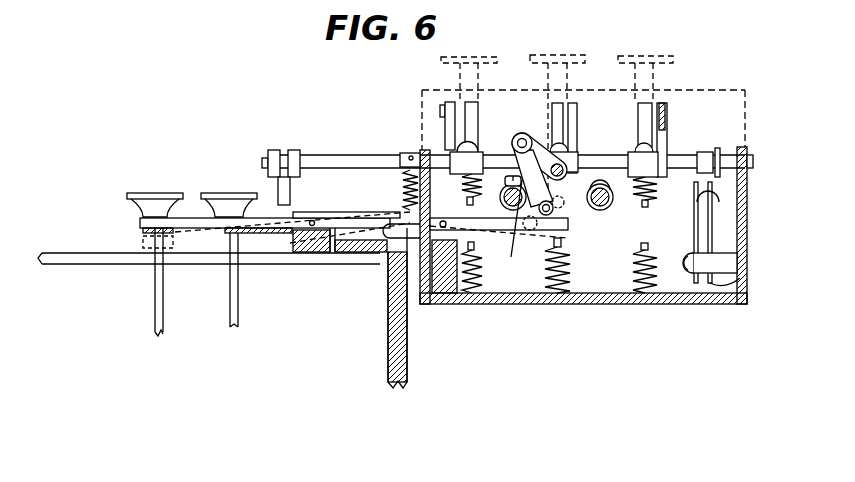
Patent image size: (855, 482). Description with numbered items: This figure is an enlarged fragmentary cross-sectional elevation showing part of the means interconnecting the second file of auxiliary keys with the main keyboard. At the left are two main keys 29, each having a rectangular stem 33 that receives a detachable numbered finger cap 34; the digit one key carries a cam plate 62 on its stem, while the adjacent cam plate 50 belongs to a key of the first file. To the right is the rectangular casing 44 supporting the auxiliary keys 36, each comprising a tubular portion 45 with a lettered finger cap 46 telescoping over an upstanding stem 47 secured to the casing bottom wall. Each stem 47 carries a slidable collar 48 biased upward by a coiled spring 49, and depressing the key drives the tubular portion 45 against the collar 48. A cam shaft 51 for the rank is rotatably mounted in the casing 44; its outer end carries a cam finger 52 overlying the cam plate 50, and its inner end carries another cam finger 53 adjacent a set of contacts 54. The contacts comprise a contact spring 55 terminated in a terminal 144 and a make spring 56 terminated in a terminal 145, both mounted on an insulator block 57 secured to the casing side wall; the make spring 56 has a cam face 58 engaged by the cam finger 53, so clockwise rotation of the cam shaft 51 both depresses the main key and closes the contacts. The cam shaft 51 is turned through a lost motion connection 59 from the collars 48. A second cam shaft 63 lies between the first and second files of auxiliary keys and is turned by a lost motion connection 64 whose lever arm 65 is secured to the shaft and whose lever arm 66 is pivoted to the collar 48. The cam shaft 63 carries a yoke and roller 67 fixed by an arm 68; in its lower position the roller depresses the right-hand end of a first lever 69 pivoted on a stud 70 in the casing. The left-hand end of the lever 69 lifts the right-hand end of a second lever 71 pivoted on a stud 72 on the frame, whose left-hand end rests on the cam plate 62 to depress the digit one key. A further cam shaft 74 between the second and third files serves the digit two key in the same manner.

The main key 29 is at (218, 192).
The stem 33 is at (158, 300).
The finger cap 34 is at (143, 205).
The auxiliary key 36 is at (635, 55).
The casing 44 is at (745, 118).
The tubular portion 45 is at (650, 82).
The finger cap 46 is at (673, 53).
The stem 47 is at (642, 115).
The slidable collar 48 is at (553, 145).
The coiled spring 49 is at (644, 200).
The cam plate 50 is at (255, 234).
The cam shaft 51 is at (340, 155).
The cam finger 52 is at (290, 196).
The cam finger 53 is at (722, 176).
The set of contacts 54 is at (692, 225).
The contact spring 55 is at (697, 200).
The make spring 56 is at (708, 212).
The insulator block 57 is at (722, 253).
The cam face 58 is at (712, 190).
The lost motion connection 59 is at (442, 122).
The cam plate 62 is at (150, 230).
The cam shaft 63 is at (504, 200).
The lost motion connection 64 is at (515, 137).
The lever arm 65 is at (510, 182).
The lever arm 66 is at (550, 137).
The yoke and roller 67 is at (555, 205).
The arm 68 is at (517, 228).
The first lever 69 is at (462, 232).
The stud 70 is at (443, 290).
The second lever 71 is at (362, 218).
The stud 72 is at (315, 252).
The cam shaft 74 is at (600, 208).
The terminal 144 is at (694, 253).
The terminal 145 is at (742, 285).